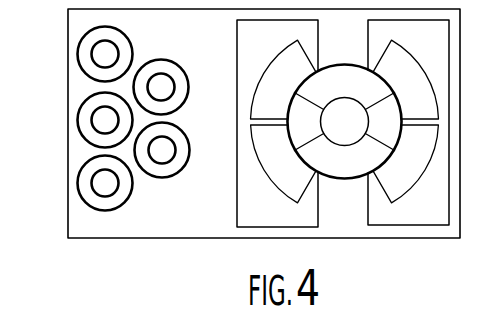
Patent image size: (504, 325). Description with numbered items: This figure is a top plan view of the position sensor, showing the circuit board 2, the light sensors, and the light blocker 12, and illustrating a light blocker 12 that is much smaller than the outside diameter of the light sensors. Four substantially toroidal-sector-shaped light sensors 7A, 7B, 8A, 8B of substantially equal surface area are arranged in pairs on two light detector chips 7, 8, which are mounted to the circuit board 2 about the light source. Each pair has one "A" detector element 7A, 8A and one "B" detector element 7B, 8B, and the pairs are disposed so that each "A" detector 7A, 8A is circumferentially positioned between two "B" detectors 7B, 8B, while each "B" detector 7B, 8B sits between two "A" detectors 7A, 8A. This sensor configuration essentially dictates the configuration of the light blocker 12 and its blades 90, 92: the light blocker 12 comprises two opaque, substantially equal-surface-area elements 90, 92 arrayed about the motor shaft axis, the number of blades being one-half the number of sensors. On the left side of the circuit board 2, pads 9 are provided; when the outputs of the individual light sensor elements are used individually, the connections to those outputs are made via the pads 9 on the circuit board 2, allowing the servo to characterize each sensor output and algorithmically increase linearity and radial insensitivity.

The circuit board 2 is at (164, 229).
The light detector chip 7 is at (438, 218).
The light sensor 7A is at (418, 91).
The light sensor 7B is at (420, 174).
The light detector chip 8 is at (259, 219).
The light sensor 8A is at (290, 176).
The light sensor 8B is at (288, 92).
The pads 9 is at (138, 87).
The light blocker 12 is at (356, 133).
The blade 90 is at (356, 94).
The blade 92 is at (356, 171).